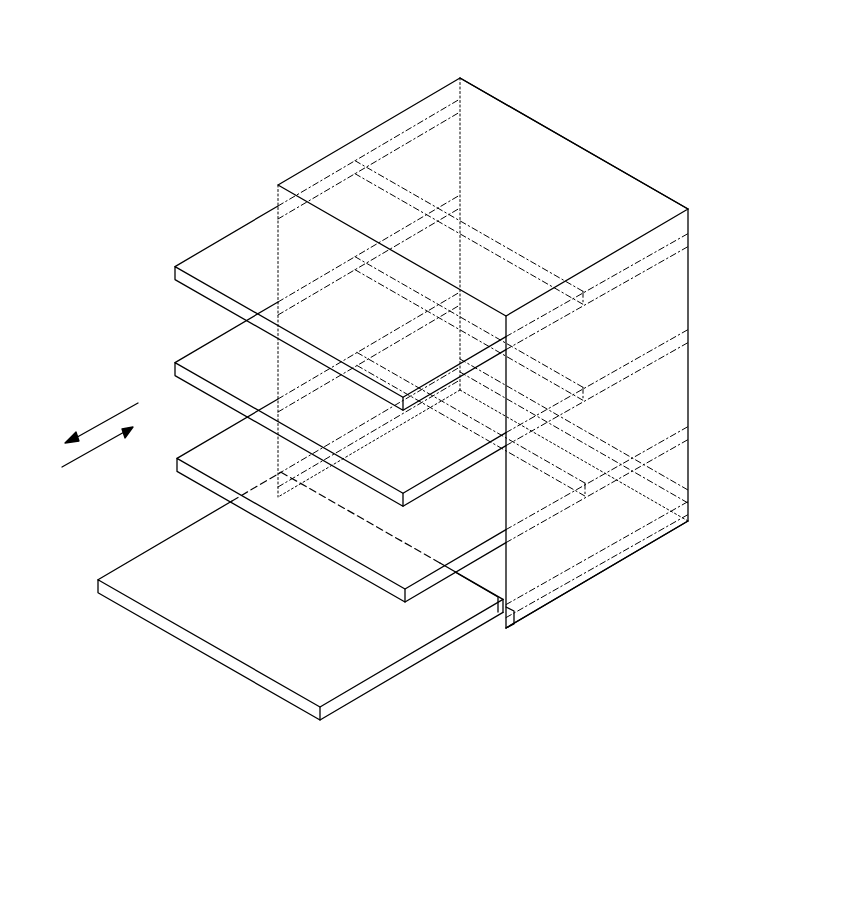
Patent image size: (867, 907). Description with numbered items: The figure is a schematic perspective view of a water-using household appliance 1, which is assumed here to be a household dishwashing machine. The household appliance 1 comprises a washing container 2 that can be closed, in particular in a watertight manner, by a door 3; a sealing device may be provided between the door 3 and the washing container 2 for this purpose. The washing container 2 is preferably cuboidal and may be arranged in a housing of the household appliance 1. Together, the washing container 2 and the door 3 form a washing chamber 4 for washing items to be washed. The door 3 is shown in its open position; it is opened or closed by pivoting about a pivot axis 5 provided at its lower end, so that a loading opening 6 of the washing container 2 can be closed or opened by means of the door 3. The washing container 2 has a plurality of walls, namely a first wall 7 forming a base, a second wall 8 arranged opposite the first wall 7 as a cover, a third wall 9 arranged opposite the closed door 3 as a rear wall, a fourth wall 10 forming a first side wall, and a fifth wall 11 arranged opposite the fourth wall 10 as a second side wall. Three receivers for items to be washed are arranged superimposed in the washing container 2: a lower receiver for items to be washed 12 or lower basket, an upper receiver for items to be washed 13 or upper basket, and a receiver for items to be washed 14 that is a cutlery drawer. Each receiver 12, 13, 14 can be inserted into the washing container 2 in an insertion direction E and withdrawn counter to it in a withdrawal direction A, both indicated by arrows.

The household appliance 1 is at (316, 78).
The washing container 2 is at (306, 162).
The door 3 is at (166, 546).
The washing chamber 4 is at (574, 431).
The pivot axis 5 is at (513, 620).
The loading opening 6 is at (482, 570).
The first wall 7 is at (588, 535).
The second wall 8 is at (505, 118).
The third wall 9 is at (603, 172).
The fourth wall 10 is at (372, 150).
The fifth wall 11 is at (662, 312).
The receiver for items to be washed 12 is at (198, 461).
The receiver for items to be washed 13 is at (196, 355).
The receiver for items to be washed 14 is at (232, 251).